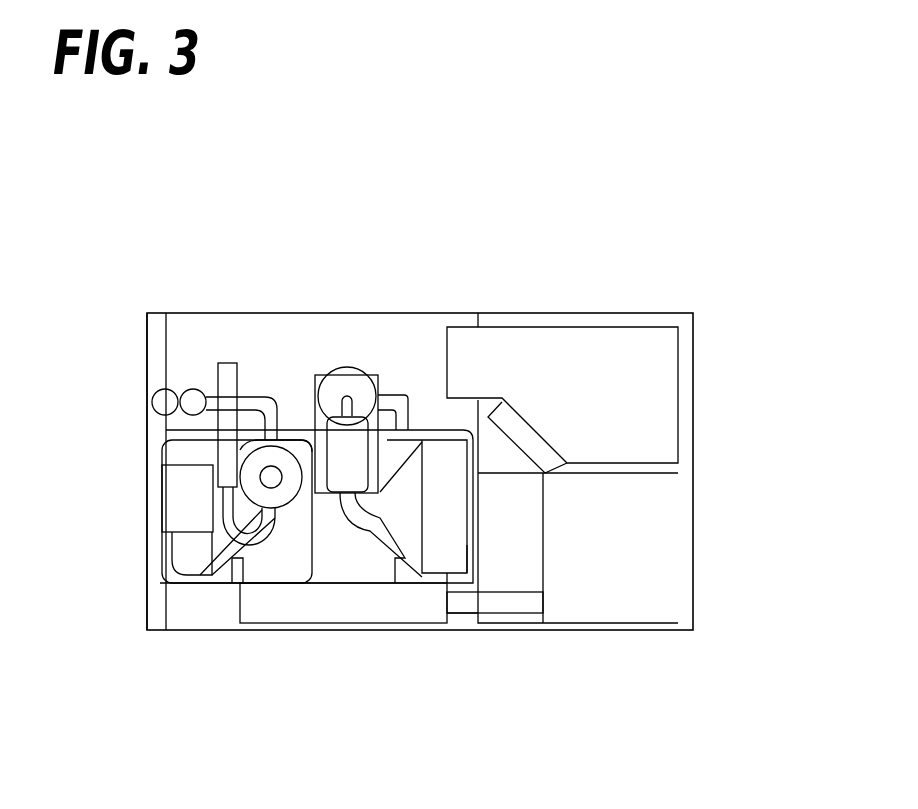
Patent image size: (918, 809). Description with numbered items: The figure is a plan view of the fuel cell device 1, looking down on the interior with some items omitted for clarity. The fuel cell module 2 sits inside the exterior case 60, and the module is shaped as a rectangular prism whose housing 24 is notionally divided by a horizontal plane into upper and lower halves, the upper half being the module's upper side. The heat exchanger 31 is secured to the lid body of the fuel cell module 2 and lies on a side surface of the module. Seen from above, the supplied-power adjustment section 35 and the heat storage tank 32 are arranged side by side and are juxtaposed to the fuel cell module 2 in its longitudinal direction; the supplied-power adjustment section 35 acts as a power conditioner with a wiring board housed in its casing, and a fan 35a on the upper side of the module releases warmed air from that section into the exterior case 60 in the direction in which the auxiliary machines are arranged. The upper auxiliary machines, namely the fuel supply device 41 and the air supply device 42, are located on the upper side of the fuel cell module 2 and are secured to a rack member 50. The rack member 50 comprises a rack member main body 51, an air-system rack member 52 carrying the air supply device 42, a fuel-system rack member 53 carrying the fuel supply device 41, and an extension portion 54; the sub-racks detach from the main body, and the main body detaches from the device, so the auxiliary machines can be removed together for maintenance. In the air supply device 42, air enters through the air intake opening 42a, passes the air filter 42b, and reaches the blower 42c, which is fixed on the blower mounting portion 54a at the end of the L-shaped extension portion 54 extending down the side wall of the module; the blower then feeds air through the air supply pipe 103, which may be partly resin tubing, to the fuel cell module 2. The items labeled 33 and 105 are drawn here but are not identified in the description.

The fuel cell device 1 is at (652, 202).
The fuel cell module 2 is at (268, 558).
The housing 24 is at (307, 530).
The heat exchanger 31 is at (398, 613).
The heat storage tank 32 is at (617, 613).
The left side wall 33 is at (172, 612).
The supplied-power adjustment section 35 is at (638, 340).
The fan 35a is at (508, 420).
The fuel supply device 41 is at (248, 478).
The air supply device 42 is at (425, 440).
The air intake opening 42a is at (470, 545).
The air filter 42b is at (447, 557).
The blower 42c is at (334, 370).
The rack member 50 is at (248, 688).
The rack member main body 51 is at (297, 507).
The air-system rack member 52 is at (392, 468).
The fuel-system rack member 53 is at (217, 548).
The extension portion 54 is at (326, 480).
The blower mounting portion 54a is at (362, 457).
The exterior case 60 is at (698, 350).
The air supply pipe 103 is at (407, 418).
The exhaust duct 105 is at (528, 607).